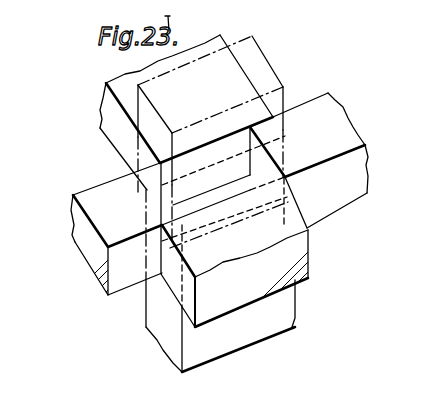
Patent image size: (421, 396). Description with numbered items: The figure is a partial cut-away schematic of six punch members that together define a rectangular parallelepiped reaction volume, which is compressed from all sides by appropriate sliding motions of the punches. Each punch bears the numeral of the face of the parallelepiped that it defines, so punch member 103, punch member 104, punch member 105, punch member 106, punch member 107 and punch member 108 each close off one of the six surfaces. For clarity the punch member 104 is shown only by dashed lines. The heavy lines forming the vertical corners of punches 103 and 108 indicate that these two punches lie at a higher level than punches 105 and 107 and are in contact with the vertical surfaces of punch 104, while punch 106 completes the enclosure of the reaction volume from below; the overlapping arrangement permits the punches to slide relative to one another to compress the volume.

The punch member 103 is at (118, 128).
The punch member 104 is at (278, 72).
The punch member 105 is at (300, 257).
The punch member 106 is at (155, 313).
The punch member 107 is at (80, 216).
The punch member 108 is at (342, 128).